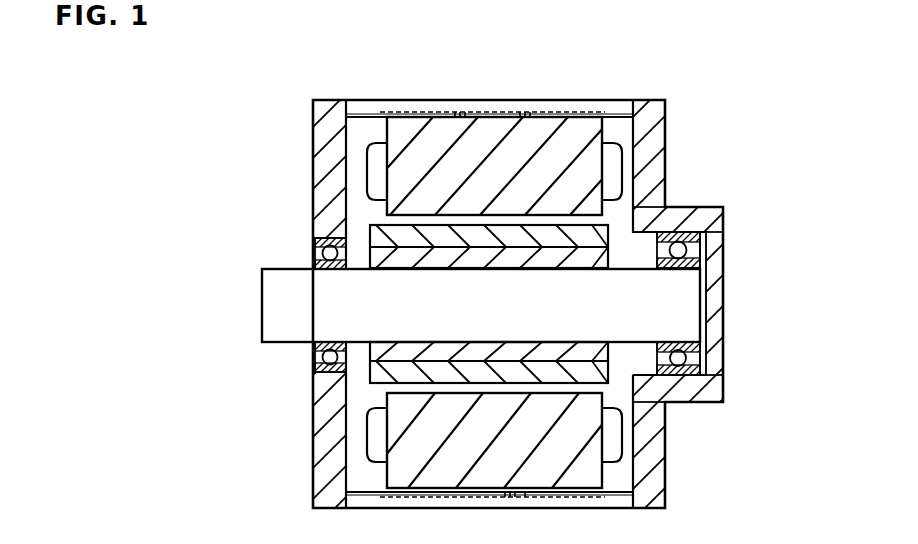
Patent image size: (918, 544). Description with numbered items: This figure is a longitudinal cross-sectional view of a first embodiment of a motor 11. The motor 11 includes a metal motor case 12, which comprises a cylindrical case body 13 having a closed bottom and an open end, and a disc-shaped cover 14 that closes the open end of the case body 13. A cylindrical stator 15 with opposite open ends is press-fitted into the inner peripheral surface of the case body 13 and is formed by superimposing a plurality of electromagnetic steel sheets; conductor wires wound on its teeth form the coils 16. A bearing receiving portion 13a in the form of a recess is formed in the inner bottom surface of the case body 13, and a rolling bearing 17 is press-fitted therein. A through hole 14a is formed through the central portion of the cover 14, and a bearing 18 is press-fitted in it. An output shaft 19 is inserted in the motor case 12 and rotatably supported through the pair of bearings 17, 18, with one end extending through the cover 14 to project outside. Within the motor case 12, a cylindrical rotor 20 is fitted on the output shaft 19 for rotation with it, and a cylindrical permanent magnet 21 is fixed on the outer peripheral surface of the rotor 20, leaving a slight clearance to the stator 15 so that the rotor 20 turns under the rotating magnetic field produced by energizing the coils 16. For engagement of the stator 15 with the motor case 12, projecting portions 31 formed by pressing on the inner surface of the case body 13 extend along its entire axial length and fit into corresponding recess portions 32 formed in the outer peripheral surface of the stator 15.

The motor 11 is at (708, 134).
The motor case 12 is at (418, 70).
The case body 13 is at (397, 100).
The bearing receiving portion 13a is at (704, 296).
The cover 14 is at (328, 112).
The through hole 14a is at (318, 363).
The stator 15 is at (555, 126).
The coils 16 is at (612, 166).
The bearing 17 is at (704, 240).
The bearing 18 is at (315, 250).
The output shaft 19 is at (270, 304).
The rotor 20 is at (634, 262).
The permanent magnet 21 is at (634, 374).
The projecting portions 31 is at (511, 120).
The recess portions 32 is at (462, 120).